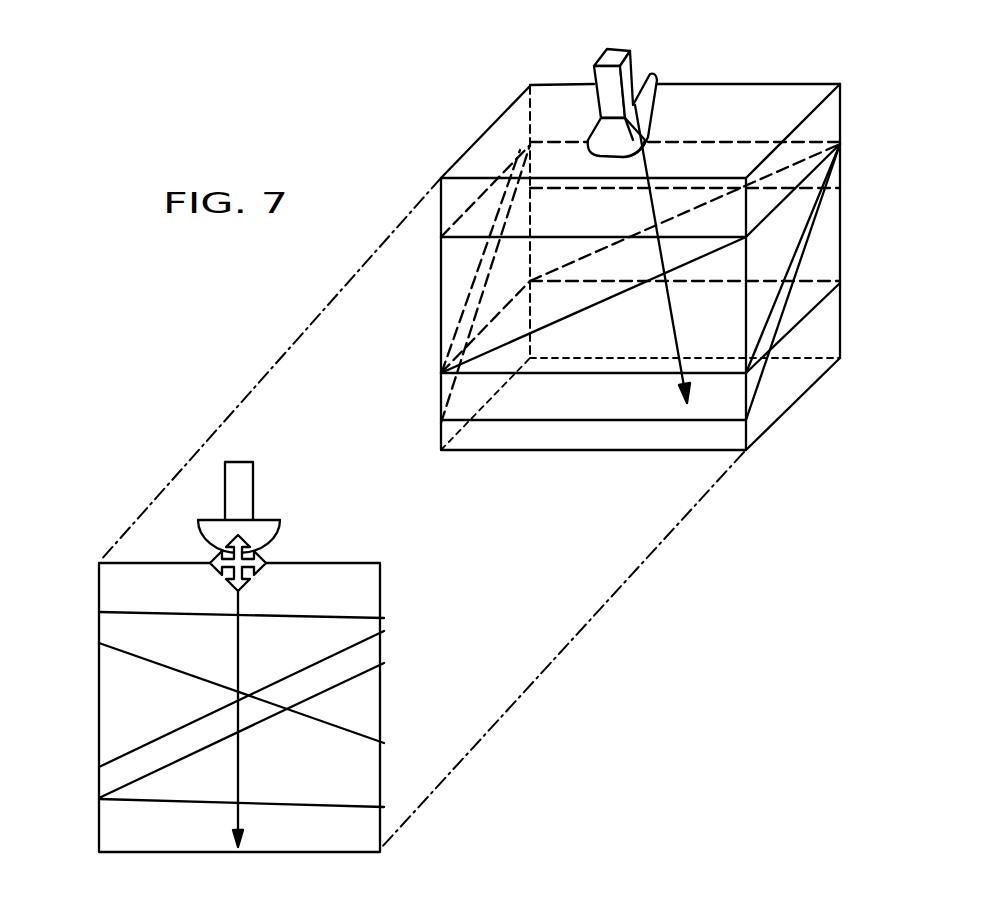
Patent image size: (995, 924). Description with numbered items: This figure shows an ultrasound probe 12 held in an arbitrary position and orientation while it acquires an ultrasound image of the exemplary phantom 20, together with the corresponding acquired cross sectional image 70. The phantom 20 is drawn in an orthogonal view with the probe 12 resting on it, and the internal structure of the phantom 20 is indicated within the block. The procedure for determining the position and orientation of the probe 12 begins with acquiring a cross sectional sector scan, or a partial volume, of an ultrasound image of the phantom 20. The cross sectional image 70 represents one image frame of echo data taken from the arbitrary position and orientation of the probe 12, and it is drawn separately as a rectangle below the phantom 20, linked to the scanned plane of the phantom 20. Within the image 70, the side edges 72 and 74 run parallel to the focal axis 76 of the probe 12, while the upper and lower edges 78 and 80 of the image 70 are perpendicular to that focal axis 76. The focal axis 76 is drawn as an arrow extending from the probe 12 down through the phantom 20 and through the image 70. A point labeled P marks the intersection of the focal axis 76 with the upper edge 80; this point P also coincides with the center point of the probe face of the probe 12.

The probe 12 is at (619, 45).
The phantom 20 is at (498, 118).
The cross sectional ultrasound image 70 is at (398, 587).
The side edge 72 is at (98, 667).
The side edge 74 is at (380, 703).
The focal axis 76 is at (672, 320).
The lower edge 78 is at (297, 853).
The upper edge 80 is at (317, 562).
The point P is at (230, 558).